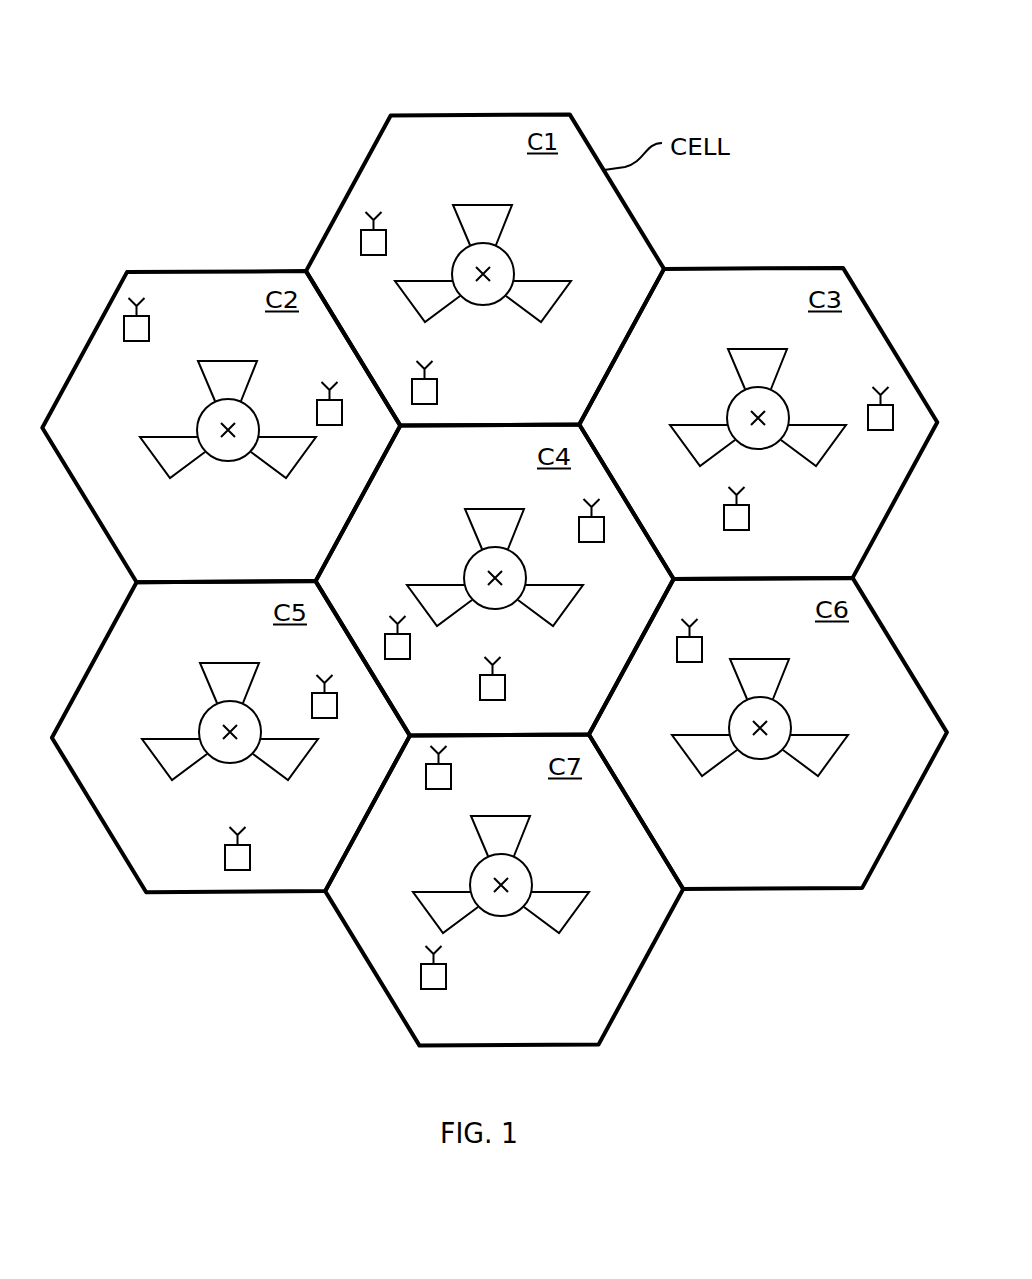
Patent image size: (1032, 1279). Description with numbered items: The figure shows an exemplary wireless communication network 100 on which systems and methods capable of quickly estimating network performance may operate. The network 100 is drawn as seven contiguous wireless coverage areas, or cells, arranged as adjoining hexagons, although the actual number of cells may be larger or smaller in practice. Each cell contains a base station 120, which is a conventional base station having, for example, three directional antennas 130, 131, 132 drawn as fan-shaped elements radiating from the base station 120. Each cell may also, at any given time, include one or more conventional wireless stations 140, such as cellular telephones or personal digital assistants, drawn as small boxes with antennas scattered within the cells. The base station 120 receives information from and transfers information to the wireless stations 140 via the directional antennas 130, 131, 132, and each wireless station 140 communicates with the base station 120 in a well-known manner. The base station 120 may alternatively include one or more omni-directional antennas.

The wireless communication network 100 is at (218, 128).
The base station 120 is at (510, 259).
The directional antenna 130 is at (420, 315).
The directional antenna 131 is at (615, 330).
The directional antenna 132 is at (481, 205).
The wireless station 140 is at (485, 404).